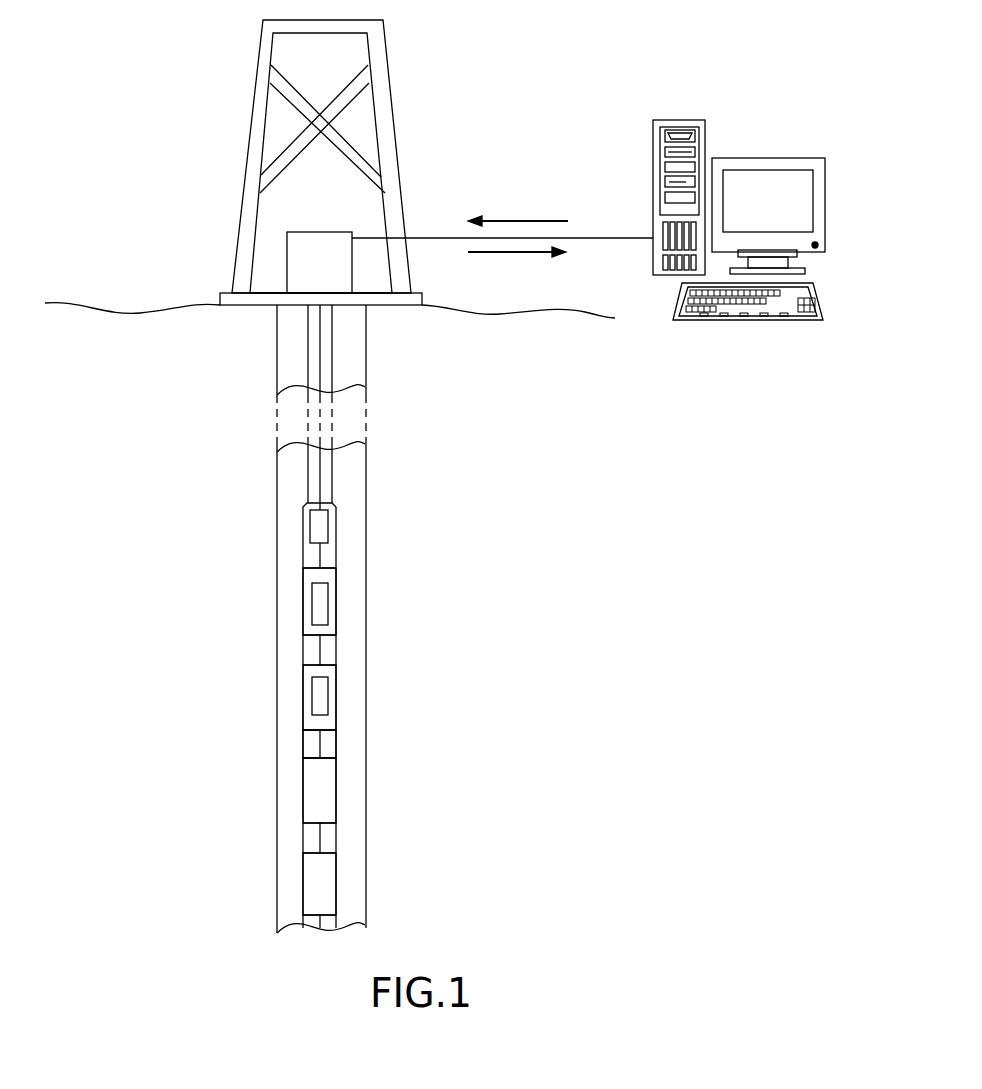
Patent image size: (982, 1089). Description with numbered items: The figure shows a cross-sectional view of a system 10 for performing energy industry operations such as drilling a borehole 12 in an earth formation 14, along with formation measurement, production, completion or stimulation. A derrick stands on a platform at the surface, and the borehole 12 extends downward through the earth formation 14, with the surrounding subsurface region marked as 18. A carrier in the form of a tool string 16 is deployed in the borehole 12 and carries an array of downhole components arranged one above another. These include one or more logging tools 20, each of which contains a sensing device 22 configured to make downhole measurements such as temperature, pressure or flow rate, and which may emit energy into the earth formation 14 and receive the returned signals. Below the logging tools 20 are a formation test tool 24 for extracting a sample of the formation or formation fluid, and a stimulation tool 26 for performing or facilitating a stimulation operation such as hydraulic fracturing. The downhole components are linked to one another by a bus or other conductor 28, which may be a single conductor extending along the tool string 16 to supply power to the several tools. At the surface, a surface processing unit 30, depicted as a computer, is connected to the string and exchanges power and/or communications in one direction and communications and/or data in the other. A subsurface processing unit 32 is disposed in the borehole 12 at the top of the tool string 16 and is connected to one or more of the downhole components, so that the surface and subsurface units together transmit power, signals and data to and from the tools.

The system 10 is at (118, 70).
The borehole 12 is at (277, 345).
The earth formation 14 is at (589, 645).
The tool string 16 is at (350, 519).
The formation 18 is at (137, 422).
The logging tool 20 is at (308, 602).
The sensing device 22 is at (323, 605).
The formation test tool 24 is at (312, 796).
The stimulation tool 26 is at (327, 886).
The conductor 28 is at (319, 743).
The surface processing unit 30 is at (685, 120).
The subsurface processing unit 32 is at (310, 527).